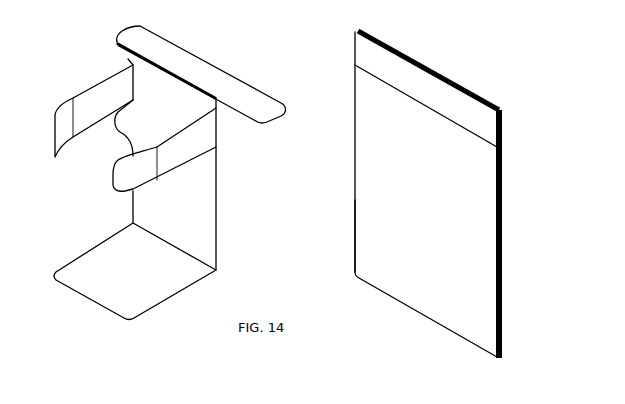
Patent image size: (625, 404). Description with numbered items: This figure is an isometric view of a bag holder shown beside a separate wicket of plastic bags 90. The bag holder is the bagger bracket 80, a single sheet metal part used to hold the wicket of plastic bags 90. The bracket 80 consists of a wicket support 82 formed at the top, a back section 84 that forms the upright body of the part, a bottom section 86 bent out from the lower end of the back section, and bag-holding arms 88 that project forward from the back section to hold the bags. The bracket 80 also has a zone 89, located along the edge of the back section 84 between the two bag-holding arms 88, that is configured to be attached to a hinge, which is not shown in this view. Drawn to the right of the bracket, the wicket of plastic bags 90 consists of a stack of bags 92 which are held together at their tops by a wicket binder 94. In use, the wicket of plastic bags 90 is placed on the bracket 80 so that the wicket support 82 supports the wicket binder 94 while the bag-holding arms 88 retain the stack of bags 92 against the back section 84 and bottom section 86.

The bagger bracket 80 is at (193, 36).
The wicket support 82 is at (241, 91).
The back section 84 is at (218, 182).
The bottom section 86 is at (168, 284).
The bag-holding arms 88 is at (86, 99).
The zone 89 is at (121, 134).
The wicket of plastic bags 90 is at (448, 76).
The stack of bags 92 is at (399, 269).
The wicket binder 94 is at (384, 64).